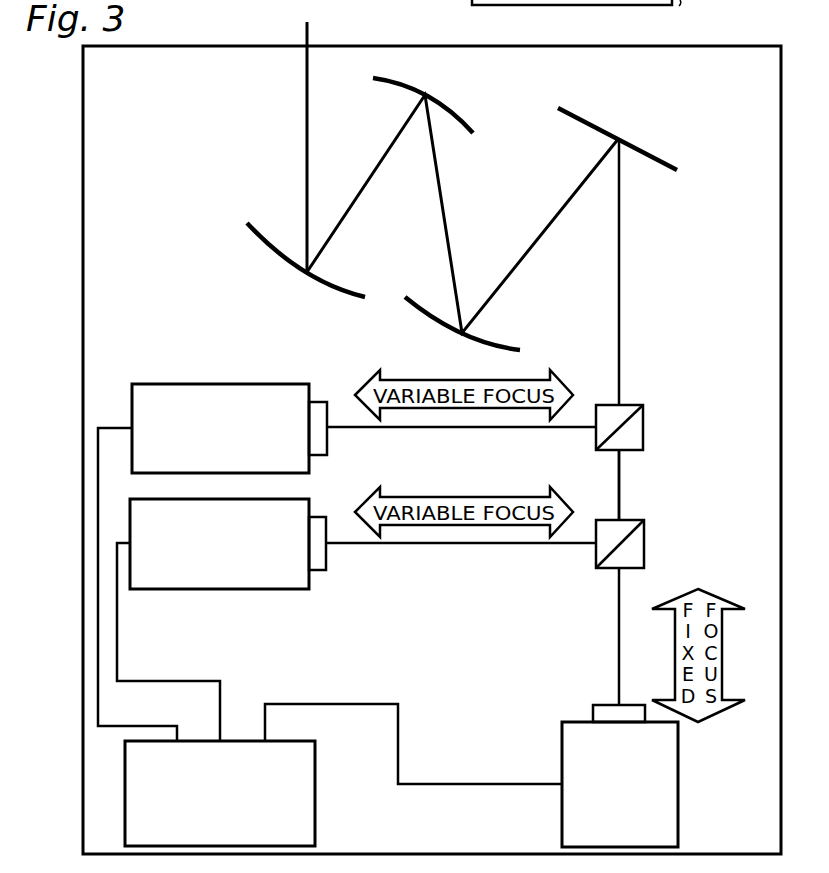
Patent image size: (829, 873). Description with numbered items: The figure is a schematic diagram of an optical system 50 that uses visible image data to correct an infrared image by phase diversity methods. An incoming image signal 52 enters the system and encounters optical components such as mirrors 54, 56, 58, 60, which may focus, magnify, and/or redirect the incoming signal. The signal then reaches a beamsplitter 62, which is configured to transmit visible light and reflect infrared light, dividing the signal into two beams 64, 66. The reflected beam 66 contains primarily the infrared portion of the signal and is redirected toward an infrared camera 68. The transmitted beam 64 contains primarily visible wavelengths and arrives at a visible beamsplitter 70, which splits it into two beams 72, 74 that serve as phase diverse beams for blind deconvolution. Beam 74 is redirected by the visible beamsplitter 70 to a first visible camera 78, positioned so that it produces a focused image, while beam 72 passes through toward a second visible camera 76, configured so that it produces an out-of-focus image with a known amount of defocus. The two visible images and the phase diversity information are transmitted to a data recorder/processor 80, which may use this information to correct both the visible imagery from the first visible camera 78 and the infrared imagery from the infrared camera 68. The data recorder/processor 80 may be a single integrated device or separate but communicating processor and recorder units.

The optical system 50 is at (48, 85).
The incoming image signal 52 is at (307, 130).
The mirror 54 is at (265, 250).
The mirror 56 is at (405, 82).
The mirror 58 is at (430, 321).
The mirror 60 is at (640, 142).
The beamsplitter 62 is at (633, 405).
The beam 64 is at (619, 490).
The beam 66 is at (450, 428).
The infrared camera 68 is at (229, 428).
The visible beamsplitter 70 is at (636, 520).
The beam 72 is at (619, 652).
The beam 74 is at (450, 544).
The second visible camera 76 is at (620, 776).
The first visible camera 78 is at (228, 544).
The data recorder/processor 80 is at (220, 793).